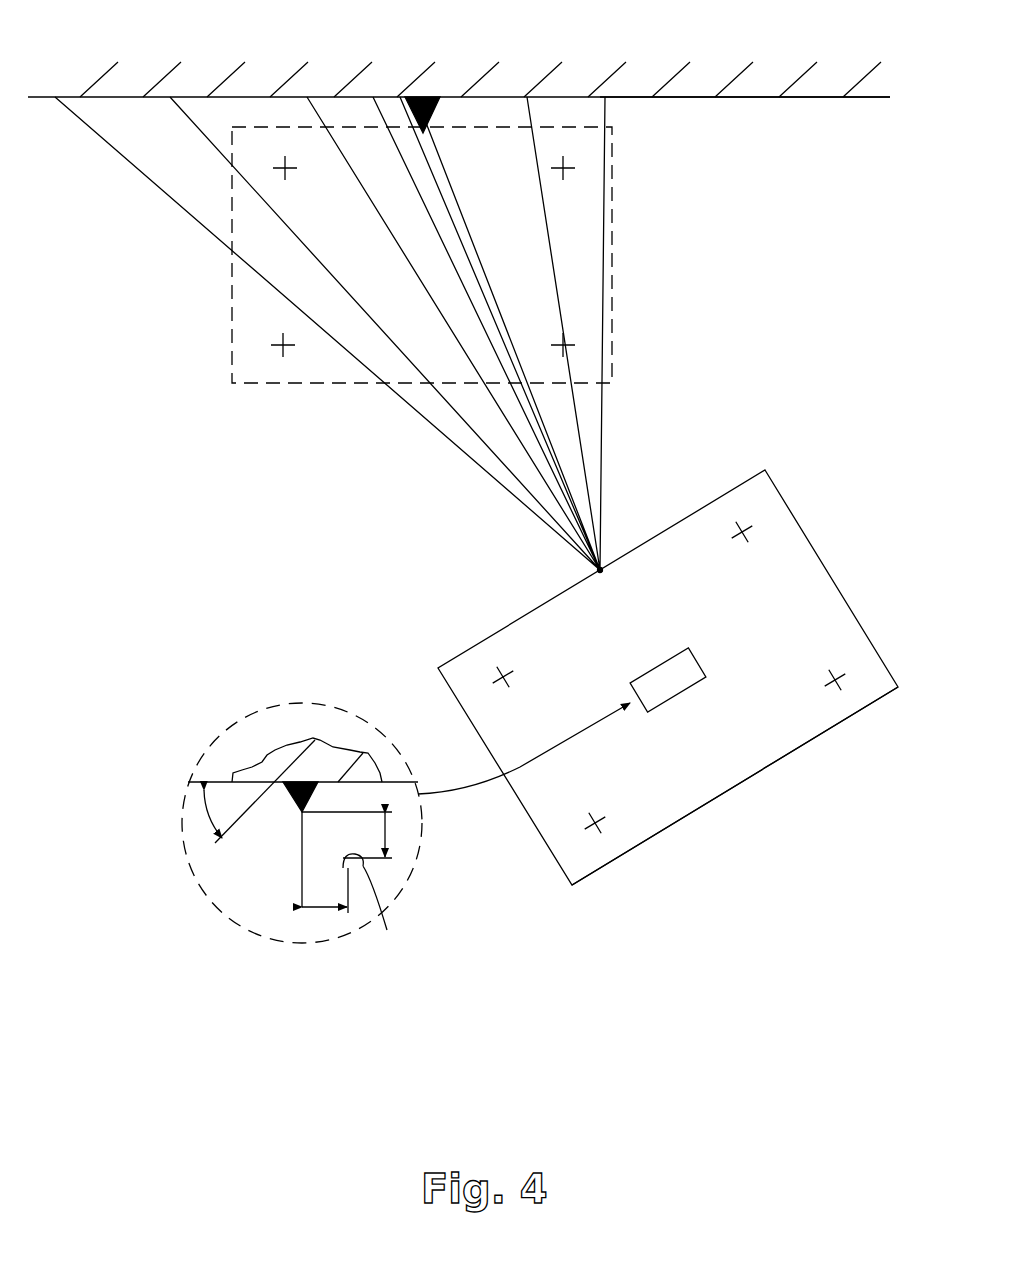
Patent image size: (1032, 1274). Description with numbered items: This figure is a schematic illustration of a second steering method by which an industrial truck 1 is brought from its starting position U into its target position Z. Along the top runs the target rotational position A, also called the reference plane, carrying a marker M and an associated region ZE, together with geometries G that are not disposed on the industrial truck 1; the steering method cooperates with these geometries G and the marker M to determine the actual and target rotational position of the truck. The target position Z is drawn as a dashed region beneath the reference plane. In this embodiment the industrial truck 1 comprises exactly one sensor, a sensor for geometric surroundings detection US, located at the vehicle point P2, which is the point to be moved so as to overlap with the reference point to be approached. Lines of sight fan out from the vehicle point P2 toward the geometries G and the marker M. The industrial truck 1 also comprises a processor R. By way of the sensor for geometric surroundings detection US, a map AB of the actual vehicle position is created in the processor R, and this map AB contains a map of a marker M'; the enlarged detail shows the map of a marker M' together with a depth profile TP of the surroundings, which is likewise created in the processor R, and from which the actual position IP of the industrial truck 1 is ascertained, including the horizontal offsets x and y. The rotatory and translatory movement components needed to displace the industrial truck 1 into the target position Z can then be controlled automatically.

The target rotational position A is at (473, 92).
The target region ZE is at (856, 100).
The geometries G is at (157, 100).
The marker M is at (446, 70).
The target position Z is at (203, 286).
The vehicle point P2 is at (627, 587).
The sensor for geometric surroundings detection US is at (600, 575).
The industrial truck 1 is at (765, 738).
The starting position U is at (741, 827).
The processor R is at (697, 666).
The map of the surroundings and of the industrial truck in the actual position AB is at (207, 708).
The map of a marker M' is at (303, 872).
The depth profile TP is at (293, 796).
The horizontal offset in the x direction x is at (317, 908).
The horizontal offset in the y direction y is at (390, 833).
The actual position of the industrial truck IP is at (365, 923).